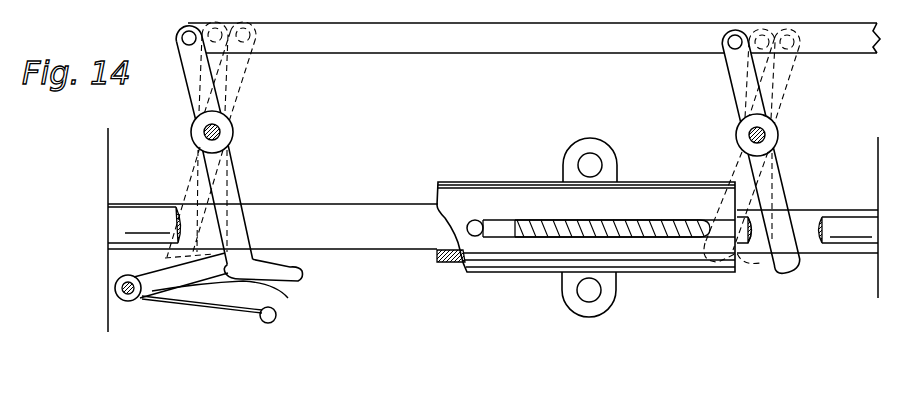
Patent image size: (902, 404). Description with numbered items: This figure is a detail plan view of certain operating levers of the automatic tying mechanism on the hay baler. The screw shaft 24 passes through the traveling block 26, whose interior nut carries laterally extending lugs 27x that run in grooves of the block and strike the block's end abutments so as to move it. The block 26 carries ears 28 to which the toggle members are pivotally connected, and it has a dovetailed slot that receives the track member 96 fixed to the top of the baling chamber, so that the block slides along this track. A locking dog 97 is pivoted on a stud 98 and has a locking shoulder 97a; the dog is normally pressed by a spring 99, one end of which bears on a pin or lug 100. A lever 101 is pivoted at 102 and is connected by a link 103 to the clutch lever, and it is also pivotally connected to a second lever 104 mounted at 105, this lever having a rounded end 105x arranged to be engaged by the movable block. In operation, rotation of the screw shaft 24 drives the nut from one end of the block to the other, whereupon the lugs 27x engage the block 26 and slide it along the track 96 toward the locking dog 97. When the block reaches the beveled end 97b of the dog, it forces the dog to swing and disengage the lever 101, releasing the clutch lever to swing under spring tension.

The screw shaft 24 is at (137, 214).
The traveling block 26 is at (697, 260).
The lugs 27x is at (475, 222).
The ears 28 is at (590, 143).
The track member 96 is at (323, 209).
The locking dog 97 is at (200, 282).
The locking shoulder 97a is at (274, 297).
The beveled end 97b is at (301, 272).
The stud 98 is at (130, 301).
The spring 99 is at (247, 303).
The pin or lug 100 is at (278, 317).
The lever 101 is at (233, 178).
The pivot 102 is at (224, 126).
The link 103 is at (534, 38).
The lever 104 is at (738, 97).
The pivot mounting 105 is at (760, 132).
The rounded end 105x is at (777, 272).